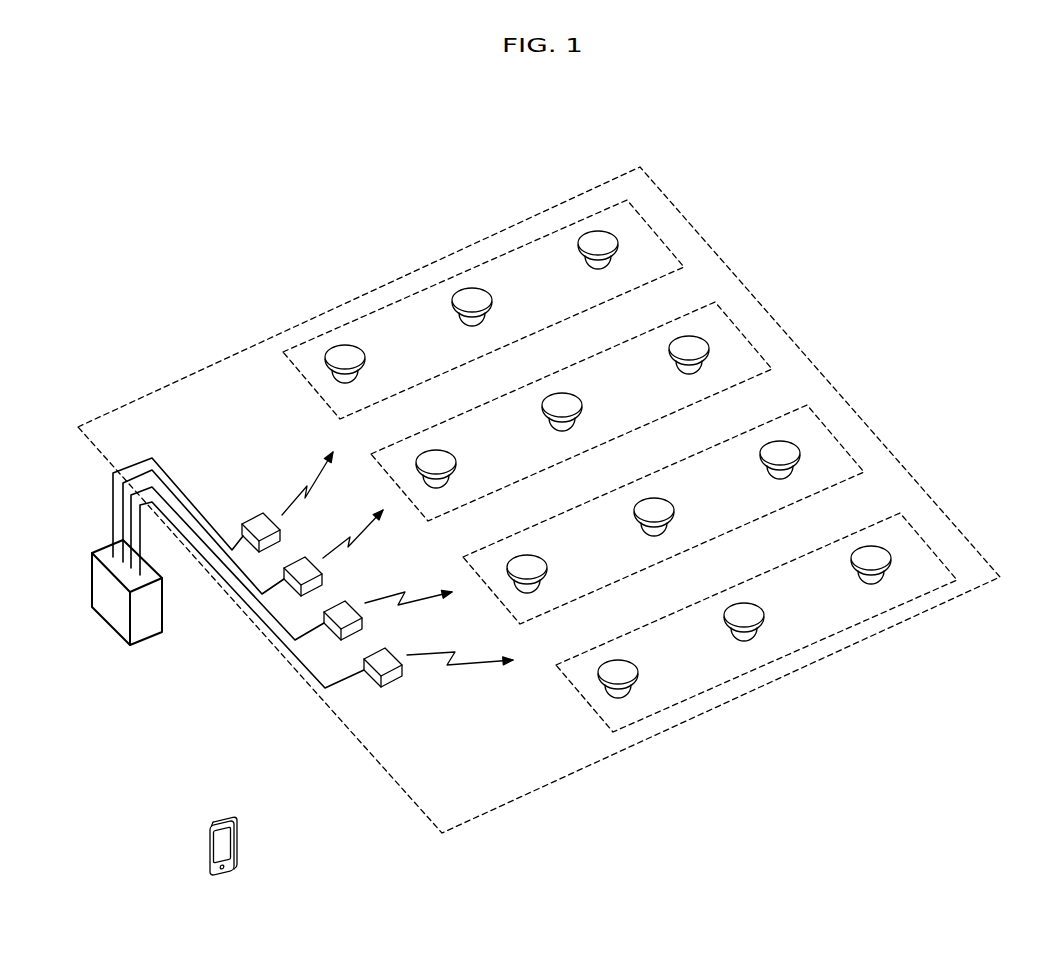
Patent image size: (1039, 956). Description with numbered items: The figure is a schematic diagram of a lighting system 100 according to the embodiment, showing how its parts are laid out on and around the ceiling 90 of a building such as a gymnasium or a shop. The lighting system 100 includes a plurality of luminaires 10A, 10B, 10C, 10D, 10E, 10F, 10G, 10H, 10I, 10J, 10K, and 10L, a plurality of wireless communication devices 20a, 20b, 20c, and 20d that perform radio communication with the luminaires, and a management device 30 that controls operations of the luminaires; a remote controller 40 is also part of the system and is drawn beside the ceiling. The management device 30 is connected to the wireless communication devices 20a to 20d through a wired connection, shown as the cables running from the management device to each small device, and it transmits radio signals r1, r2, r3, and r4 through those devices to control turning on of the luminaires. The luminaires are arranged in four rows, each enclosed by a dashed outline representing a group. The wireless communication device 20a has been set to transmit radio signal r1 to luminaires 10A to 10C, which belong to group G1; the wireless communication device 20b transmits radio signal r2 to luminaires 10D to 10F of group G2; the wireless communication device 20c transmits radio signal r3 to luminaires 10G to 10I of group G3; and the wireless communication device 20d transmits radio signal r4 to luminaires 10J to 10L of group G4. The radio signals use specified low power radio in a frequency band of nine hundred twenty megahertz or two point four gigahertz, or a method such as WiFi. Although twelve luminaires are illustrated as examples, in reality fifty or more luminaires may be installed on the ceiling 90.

The lighting system 100 is at (248, 258).
The ceiling 90 is at (329, 312).
The group G1 is at (653, 223).
The group G2 is at (745, 333).
The group G3 is at (835, 438).
The group G4 is at (928, 538).
The luminaire 10A is at (350, 358).
The luminaire 10B is at (477, 301).
The luminaire 10C is at (603, 244).
The luminaire 10D is at (441, 463).
The luminaire 10E is at (567, 406).
The luminaire 10F is at (694, 349).
The luminaire 10G is at (532, 568).
The luminaire 10H is at (659, 511).
The luminaire 10I is at (785, 454).
The luminaire 10J is at (623, 673).
The luminaire 10K is at (749, 616).
The luminaire 10L is at (876, 559).
The wireless communication device 20a is at (262, 524).
The wireless communication device 20b is at (307, 568).
The wireless communication device 20c is at (362, 614).
The wireless communication device 20d is at (390, 676).
The management device 30 is at (105, 611).
The remote controller 40 is at (240, 837).
The radio signal r1 is at (301, 483).
The radio signal r2 is at (349, 534).
The radio signal r3 is at (408, 589).
The radio signal r4 is at (460, 647).